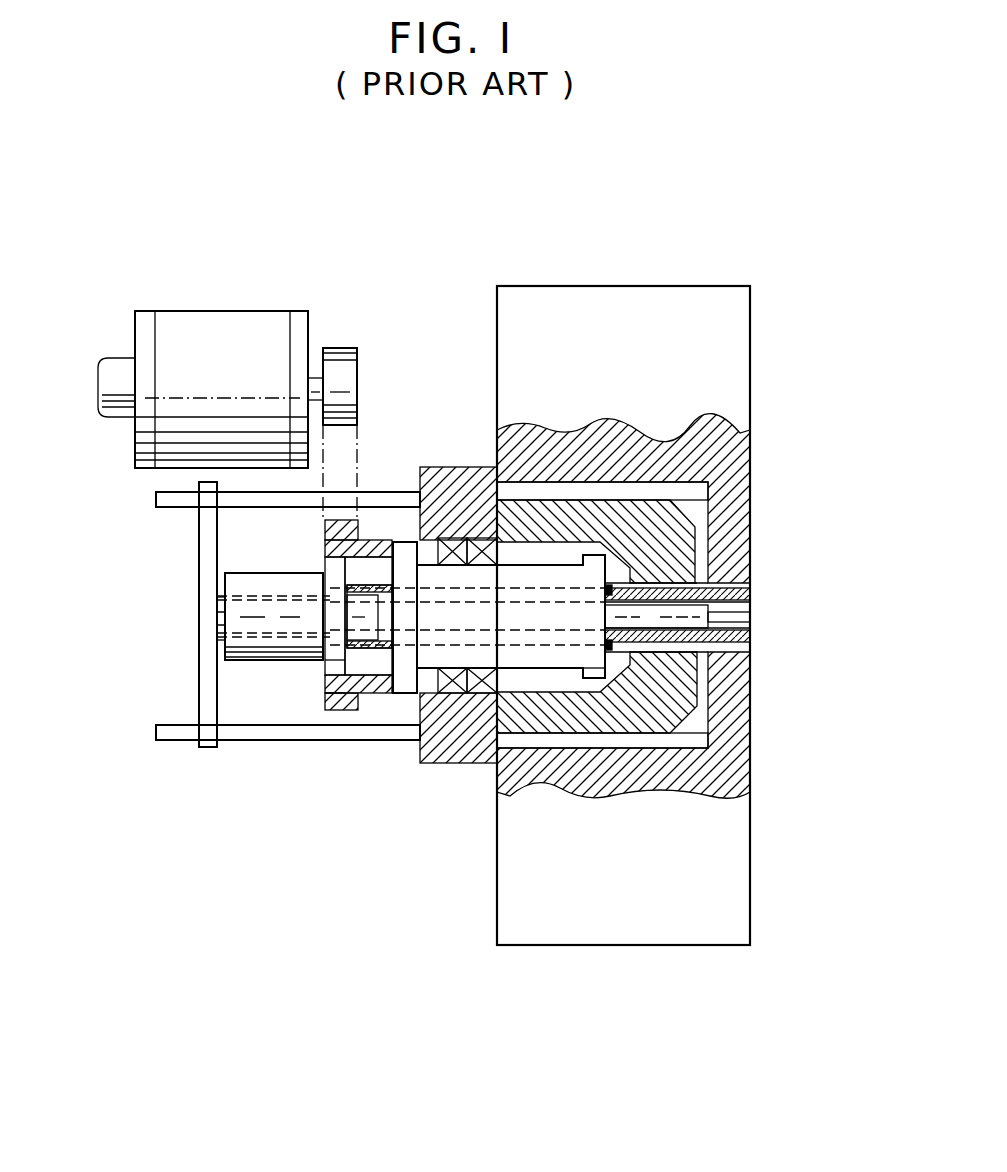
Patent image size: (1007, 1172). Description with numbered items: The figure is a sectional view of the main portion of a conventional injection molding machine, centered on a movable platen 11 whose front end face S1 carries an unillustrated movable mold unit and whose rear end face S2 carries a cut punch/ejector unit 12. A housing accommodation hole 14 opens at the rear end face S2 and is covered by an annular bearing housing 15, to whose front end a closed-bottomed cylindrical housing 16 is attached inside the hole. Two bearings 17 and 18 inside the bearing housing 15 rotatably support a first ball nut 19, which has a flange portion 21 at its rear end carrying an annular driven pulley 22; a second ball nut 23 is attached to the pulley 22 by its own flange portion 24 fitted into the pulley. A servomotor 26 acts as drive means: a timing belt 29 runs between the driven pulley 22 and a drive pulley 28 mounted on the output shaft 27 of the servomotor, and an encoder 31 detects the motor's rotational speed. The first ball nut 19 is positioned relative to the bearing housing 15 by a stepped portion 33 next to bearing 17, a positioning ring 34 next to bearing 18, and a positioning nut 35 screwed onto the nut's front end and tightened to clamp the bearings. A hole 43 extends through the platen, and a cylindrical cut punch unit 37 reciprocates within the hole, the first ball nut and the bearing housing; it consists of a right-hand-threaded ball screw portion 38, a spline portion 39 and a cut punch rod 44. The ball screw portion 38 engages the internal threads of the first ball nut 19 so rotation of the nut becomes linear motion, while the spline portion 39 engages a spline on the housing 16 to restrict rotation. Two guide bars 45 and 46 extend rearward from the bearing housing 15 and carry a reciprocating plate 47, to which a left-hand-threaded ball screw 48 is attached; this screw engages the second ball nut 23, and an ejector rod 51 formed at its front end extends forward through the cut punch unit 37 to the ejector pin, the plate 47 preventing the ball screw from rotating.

The movable platen 11 is at (627, 287).
The front end face S1 is at (750, 322).
The rear end face S2 is at (497, 312).
The cut punch/ejector unit 12 is at (346, 760).
The housing accommodation hole 14 is at (690, 495).
The bearing housing 15 is at (460, 475).
The closed-bottomed cylindrical housing 16 is at (690, 535).
The bearing 17 is at (455, 695).
The bearing 18 is at (480, 695).
The first ball nut 19 is at (528, 581).
The flange portion 21 is at (392, 540).
The driven pulley 22 is at (325, 697).
The second ball nut 23 is at (262, 571).
The flange portion 24 is at (328, 663).
The servomotor 26 is at (208, 333).
The output shaft 27 is at (317, 378).
The drive pulley 28 is at (342, 350).
The timing belt 29 is at (357, 447).
The encoder 31 is at (122, 358).
The stepped portion 33 is at (425, 665).
The positioning ring 34 is at (538, 672).
The positioning nut 35 is at (585, 665).
The cut punch unit 37 is at (616, 573).
The ball screw portion 38 is at (378, 575).
The spline portion 39 is at (665, 578).
The hole 43 is at (752, 645).
The cut punch rod 44 is at (752, 593).
The guide bar 45 is at (247, 500).
The guide bar 46 is at (323, 736).
The plate 47 is at (198, 700).
The ball screw 48 is at (220, 612).
The ejector rod 51 is at (752, 617).